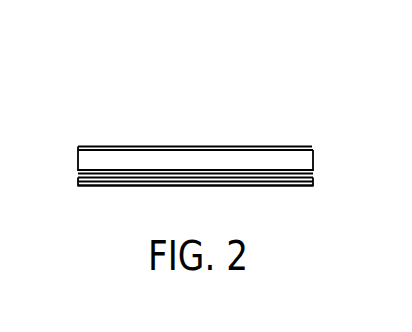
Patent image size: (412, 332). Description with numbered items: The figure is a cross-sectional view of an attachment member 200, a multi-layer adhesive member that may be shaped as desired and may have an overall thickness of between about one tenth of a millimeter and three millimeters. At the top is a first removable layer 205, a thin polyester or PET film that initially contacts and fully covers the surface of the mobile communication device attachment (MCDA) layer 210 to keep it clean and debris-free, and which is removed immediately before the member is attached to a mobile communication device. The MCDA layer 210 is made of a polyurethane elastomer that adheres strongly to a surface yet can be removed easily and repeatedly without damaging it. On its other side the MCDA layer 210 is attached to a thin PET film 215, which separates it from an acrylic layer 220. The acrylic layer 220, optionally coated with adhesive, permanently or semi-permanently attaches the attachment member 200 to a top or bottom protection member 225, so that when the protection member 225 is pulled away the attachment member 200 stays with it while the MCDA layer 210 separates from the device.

The attachment member 200 is at (223, 149).
The first removable layer 205 is at (300, 146).
The mobile communication device attachment (MCDA) layer 210 is at (318, 158).
The PET film 215 is at (93, 172).
The acrylic layer 220 is at (314, 180).
The top or bottom protection member 225 is at (103, 187).